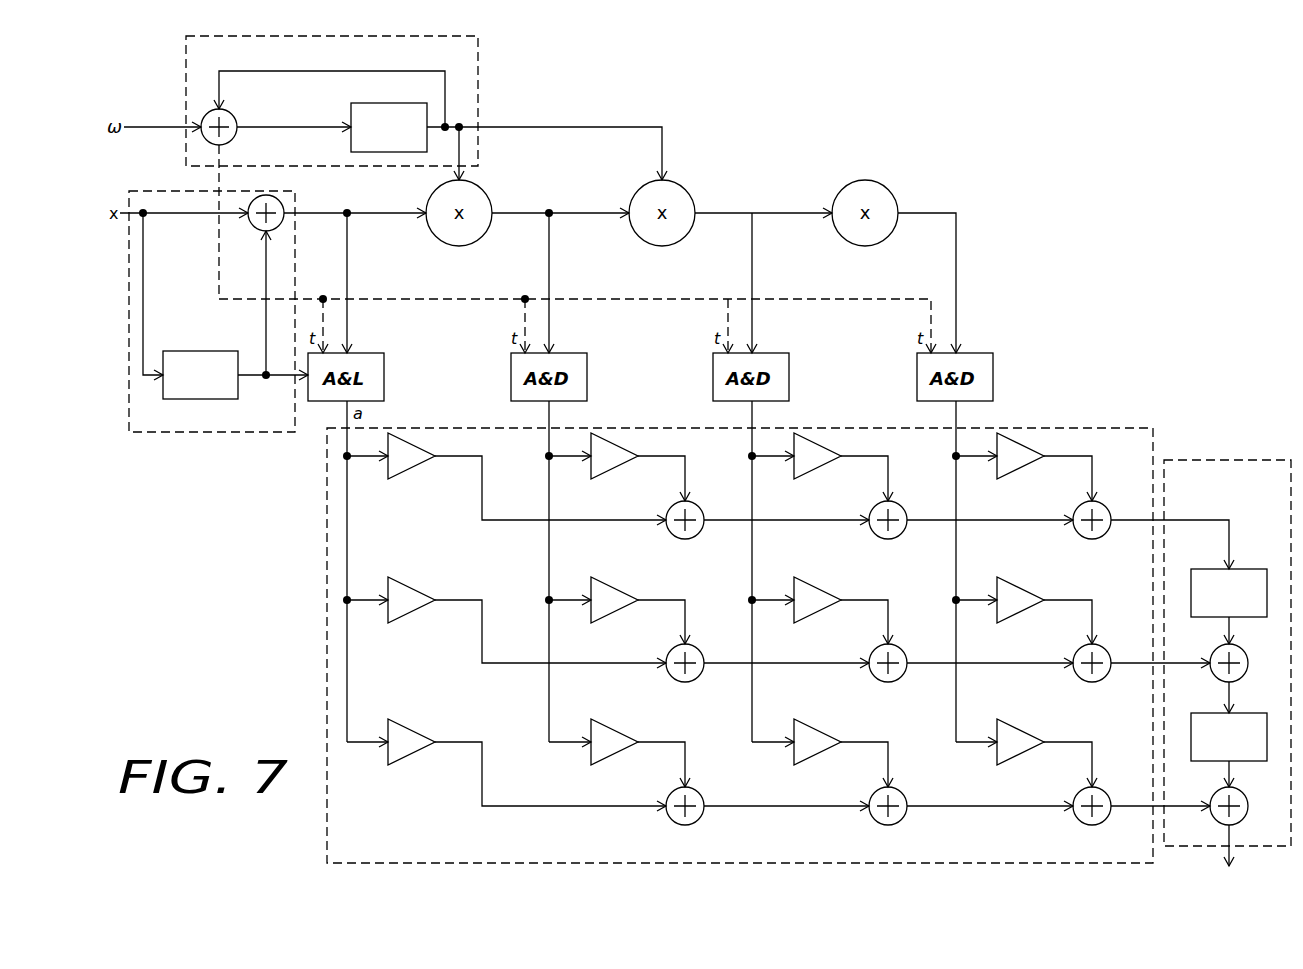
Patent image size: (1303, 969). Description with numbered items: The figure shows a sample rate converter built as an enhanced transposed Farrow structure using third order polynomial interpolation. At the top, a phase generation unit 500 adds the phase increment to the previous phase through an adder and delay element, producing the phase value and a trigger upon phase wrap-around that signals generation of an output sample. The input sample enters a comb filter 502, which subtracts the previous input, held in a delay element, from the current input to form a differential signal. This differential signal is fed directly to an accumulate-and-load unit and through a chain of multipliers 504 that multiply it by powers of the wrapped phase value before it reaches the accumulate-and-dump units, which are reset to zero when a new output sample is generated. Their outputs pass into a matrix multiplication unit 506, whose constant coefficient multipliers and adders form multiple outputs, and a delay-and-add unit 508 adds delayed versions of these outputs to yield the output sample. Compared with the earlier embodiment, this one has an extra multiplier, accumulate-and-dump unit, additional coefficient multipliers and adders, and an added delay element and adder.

The phase generation unit 500 is at (478, 65).
The comb filter 502 is at (207, 432).
The multipliers 504 is at (463, 246).
The matrix multiplication unit 506 is at (327, 506).
The delay-and-add unit 508 is at (1230, 460).